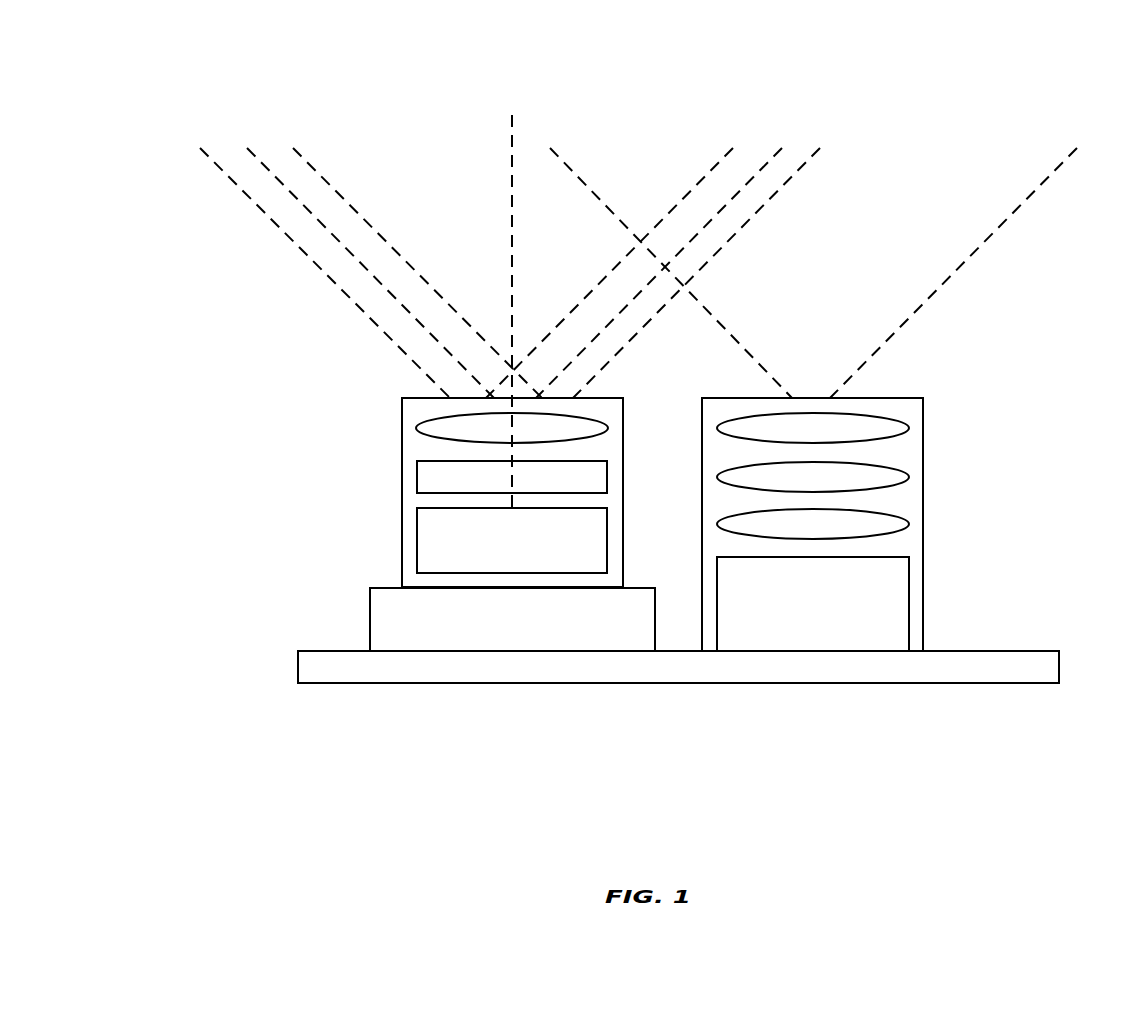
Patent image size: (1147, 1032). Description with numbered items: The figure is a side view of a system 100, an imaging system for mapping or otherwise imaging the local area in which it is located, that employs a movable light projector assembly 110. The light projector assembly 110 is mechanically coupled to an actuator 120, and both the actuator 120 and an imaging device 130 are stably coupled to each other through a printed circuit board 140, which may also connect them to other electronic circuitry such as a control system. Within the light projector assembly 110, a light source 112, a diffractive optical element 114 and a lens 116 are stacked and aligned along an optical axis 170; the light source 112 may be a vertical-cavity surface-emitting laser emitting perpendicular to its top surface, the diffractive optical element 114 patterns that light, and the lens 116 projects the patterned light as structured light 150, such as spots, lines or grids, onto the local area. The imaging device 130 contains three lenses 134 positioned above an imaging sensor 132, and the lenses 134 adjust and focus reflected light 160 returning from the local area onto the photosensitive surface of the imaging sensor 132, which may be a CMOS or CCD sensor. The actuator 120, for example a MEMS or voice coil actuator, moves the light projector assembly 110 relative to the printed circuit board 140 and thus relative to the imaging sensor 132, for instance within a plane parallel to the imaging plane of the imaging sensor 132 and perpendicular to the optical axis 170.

The system 100 is at (188, 151).
The light projector assembly 110 is at (374, 407).
The light source 112 is at (417, 541).
The diffractive optical element 114 is at (417, 477).
The lens 116 is at (416, 428).
The actuator 120 is at (370, 636).
The imaging device 130 is at (924, 454).
The imaging sensor 132 is at (877, 590).
The lenses 134 is at (909, 524).
The printed circuit board 140 is at (717, 684).
The structured light 150 is at (417, 272).
The reflected light 160 is at (923, 303).
The optical axis 170 is at (512, 311).